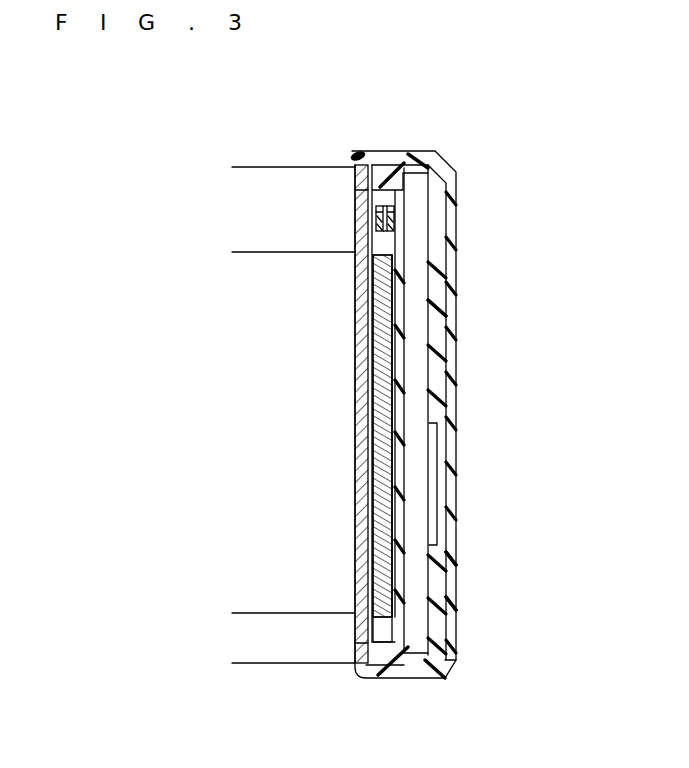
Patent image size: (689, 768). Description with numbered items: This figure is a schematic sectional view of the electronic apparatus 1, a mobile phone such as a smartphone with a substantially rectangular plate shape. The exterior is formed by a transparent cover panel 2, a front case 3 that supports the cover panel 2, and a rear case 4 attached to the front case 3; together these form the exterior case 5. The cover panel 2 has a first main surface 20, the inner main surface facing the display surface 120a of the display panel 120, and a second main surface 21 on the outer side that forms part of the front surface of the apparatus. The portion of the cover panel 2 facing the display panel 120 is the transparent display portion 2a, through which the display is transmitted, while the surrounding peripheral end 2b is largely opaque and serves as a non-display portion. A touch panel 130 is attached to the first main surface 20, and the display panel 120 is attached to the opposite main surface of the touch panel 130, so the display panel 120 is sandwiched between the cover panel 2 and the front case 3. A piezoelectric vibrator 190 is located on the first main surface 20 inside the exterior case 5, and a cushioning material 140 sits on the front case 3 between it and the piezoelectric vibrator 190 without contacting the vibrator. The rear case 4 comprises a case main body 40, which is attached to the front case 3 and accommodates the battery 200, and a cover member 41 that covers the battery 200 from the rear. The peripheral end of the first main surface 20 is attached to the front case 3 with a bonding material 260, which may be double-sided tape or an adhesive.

The electronic apparatus 1 is at (388, 136).
The cover panel 2 is at (357, 345).
The display portion 2a is at (270, 254).
The peripheral end 2b is at (270, 169).
The front case 3 is at (400, 428).
The rear case 4 is at (520, 548).
The exterior case 5 is at (437, 146).
The first main surface 20 is at (395, 370).
The second main surface 21 is at (385, 378).
The case main body 40 is at (440, 603).
The cover member 41 is at (450, 565).
The display panel 120 is at (430, 272).
The display surface 120a is at (352, 300).
The touch panel 130 is at (430, 318).
The cushioning material 140 is at (405, 222).
The piezoelectric vibrator 190 is at (385, 222).
The battery 200 is at (440, 478).
The bonding material 260 is at (355, 176).